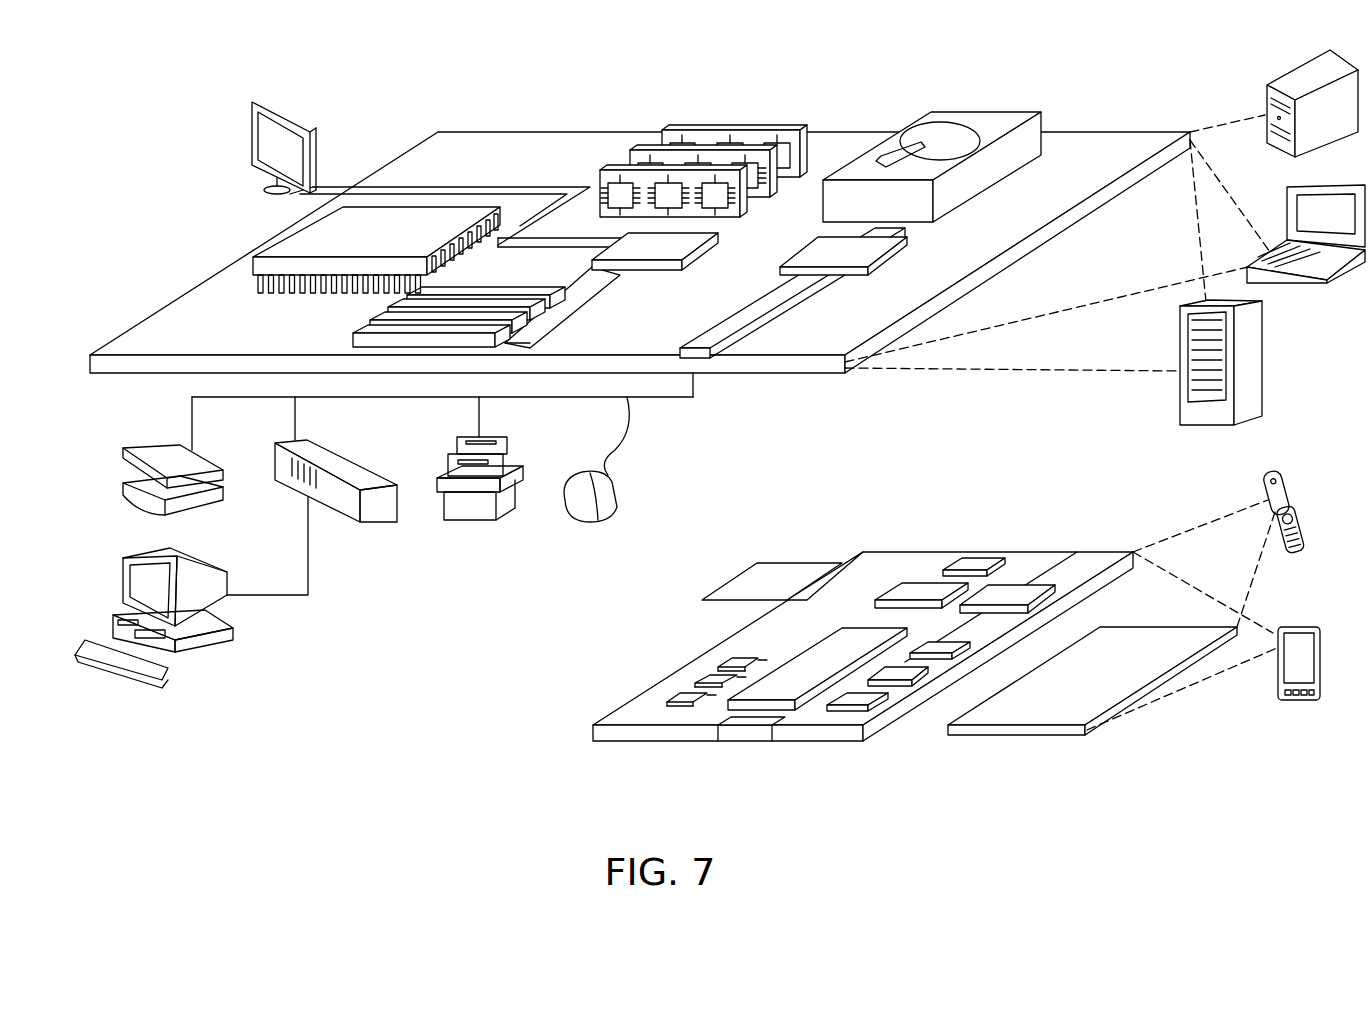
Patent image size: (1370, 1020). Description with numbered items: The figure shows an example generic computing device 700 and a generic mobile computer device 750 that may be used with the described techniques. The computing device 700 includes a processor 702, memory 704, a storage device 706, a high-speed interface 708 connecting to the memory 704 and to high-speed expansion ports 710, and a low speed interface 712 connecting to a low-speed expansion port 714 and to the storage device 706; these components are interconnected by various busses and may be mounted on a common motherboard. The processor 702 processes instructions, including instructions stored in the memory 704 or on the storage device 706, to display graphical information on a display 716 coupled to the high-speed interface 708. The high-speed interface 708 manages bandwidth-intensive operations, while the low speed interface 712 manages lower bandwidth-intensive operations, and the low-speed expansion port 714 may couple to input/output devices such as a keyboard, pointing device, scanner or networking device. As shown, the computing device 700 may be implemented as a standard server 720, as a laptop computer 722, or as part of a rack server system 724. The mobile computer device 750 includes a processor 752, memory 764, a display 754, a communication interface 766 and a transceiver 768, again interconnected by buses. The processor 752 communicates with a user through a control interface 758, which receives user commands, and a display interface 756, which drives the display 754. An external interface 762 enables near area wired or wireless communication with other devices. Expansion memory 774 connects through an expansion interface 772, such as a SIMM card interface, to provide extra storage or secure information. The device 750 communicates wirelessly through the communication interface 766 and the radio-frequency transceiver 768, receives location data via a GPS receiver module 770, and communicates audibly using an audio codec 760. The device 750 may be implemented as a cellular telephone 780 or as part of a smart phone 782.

The computing device 700 is at (385, 74).
The processor 702 is at (279, 238).
The memory 704 is at (746, 128).
The storage device 706 is at (976, 110).
The high-speed interface 708 is at (669, 247).
The high-speed expansion ports 710 is at (380, 316).
The low speed interface 712 is at (820, 250).
The low-speed expansion port 714 is at (703, 345).
The display 716 is at (255, 100).
The standard server 720 is at (1284, 80).
The laptop computer 722 is at (1344, 180).
The rack server system 724 is at (1264, 360).
The mobile computer device 750 is at (542, 755).
The processor 752 is at (786, 670).
The display 754 is at (1131, 645).
The display interface 756 is at (866, 700).
The control interface 758 is at (908, 673).
The audio codec 760 is at (946, 646).
The external interface 762 is at (746, 730).
The memory 764 is at (700, 681).
The communication interface 766 is at (920, 585).
The transceiver 768 is at (1015, 588).
The GPS receiver module 770 is at (975, 562).
The expansion interface 772 is at (842, 565).
The expansion memory 774 is at (760, 562).
The cellular telephone 780 is at (1278, 474).
The smart phone 782 is at (1293, 626).